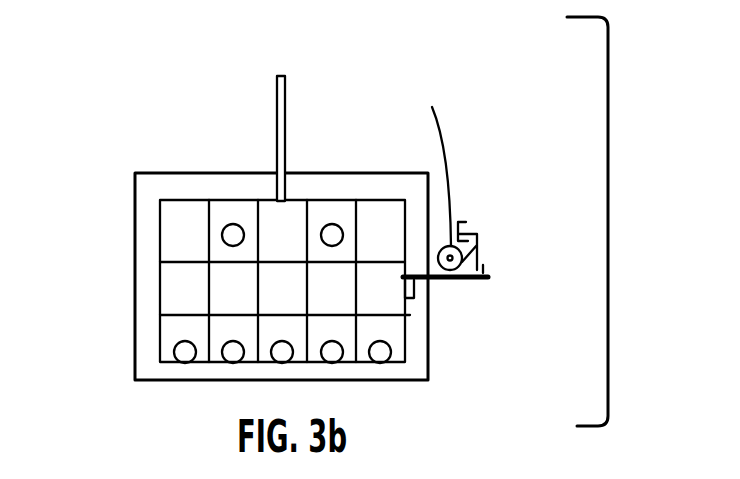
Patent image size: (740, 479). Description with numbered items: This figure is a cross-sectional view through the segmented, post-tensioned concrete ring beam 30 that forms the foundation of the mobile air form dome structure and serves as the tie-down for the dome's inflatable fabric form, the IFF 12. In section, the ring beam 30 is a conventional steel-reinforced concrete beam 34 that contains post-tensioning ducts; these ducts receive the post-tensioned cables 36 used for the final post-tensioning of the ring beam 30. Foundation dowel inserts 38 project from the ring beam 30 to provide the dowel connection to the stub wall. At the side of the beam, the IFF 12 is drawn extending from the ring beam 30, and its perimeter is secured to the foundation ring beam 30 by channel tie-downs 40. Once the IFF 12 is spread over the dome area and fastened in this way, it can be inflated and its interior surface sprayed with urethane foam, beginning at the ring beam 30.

The inflatable fabric form (IFF) 12 is at (437, 132).
The ring beam 30 is at (608, 125).
The steel-reinforced concrete beam 34 is at (262, 176).
The post-tensioned cables 36 is at (172, 338).
The foundation dowel inserts 38 is at (276, 100).
The channel tie-downs 40 is at (477, 246).